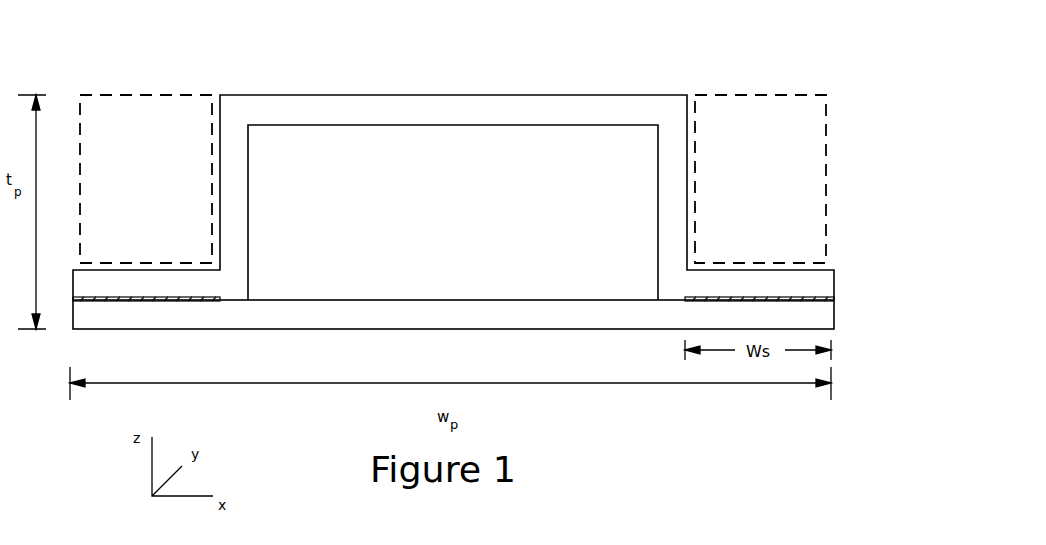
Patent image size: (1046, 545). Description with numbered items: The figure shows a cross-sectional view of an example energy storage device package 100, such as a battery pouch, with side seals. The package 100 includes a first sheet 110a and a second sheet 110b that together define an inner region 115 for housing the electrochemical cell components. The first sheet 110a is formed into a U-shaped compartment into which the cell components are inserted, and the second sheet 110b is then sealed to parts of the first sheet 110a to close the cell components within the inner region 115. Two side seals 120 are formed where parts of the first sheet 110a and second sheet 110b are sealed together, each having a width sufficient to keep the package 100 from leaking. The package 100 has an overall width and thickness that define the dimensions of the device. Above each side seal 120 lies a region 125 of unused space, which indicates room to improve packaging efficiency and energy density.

The package 100 is at (497, 190).
The first sheet 110a is at (323, 113).
The second sheet 110b is at (508, 308).
The inner region 115 is at (453, 212).
The side seal 120 is at (130, 302).
The region of unused space 125 is at (453, 179).